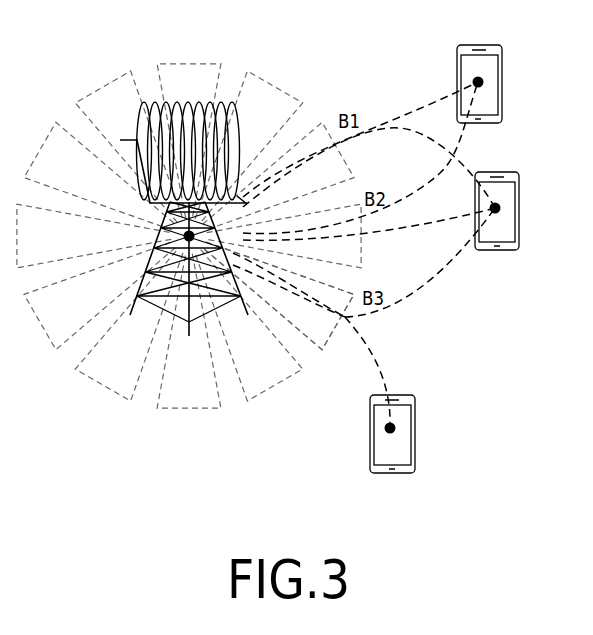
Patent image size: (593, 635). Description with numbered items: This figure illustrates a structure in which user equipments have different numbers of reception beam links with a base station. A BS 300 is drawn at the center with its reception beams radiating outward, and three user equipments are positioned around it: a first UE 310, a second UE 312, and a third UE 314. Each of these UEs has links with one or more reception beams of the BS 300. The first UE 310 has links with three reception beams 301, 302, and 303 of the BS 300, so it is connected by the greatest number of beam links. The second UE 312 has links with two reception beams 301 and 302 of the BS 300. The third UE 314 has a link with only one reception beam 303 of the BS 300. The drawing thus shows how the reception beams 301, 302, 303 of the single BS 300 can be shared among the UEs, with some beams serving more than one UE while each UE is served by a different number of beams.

The BS 300 is at (135, 312).
The reception beam 301 is at (320, 130).
The reception beam 302 is at (355, 250).
The reception beam 303 is at (328, 340).
The UE#1 310 is at (519, 208).
The UE#2 312 is at (502, 83).
The UE#3 314 is at (415, 429).